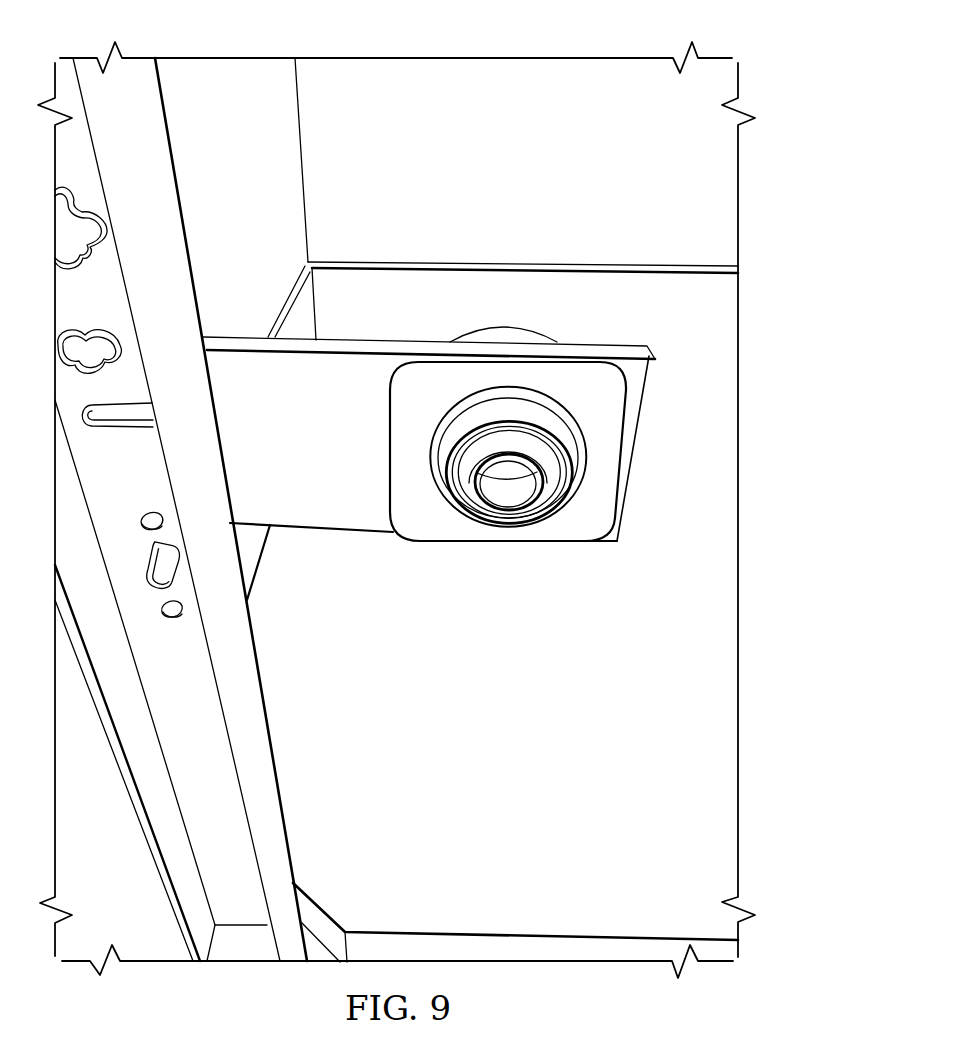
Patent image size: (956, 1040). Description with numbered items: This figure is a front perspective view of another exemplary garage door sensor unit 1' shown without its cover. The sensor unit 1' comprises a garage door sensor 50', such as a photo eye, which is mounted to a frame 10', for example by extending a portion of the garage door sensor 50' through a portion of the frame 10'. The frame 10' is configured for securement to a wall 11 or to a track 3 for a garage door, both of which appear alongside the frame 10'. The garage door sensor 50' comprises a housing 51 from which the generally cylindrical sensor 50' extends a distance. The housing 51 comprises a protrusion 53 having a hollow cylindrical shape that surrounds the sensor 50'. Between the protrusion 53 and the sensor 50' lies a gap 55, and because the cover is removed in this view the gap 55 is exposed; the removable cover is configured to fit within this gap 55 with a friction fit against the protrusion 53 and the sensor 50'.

The sensor unit 1' is at (450, 510).
The track 3 is at (187, 753).
The frame 10' is at (429, 440).
The wall 11 is at (242, 83).
The housing 51 is at (608, 413).
The protrusion 53 is at (577, 467).
The gap 55 is at (444, 496).
The garage door sensor 50' is at (515, 529).